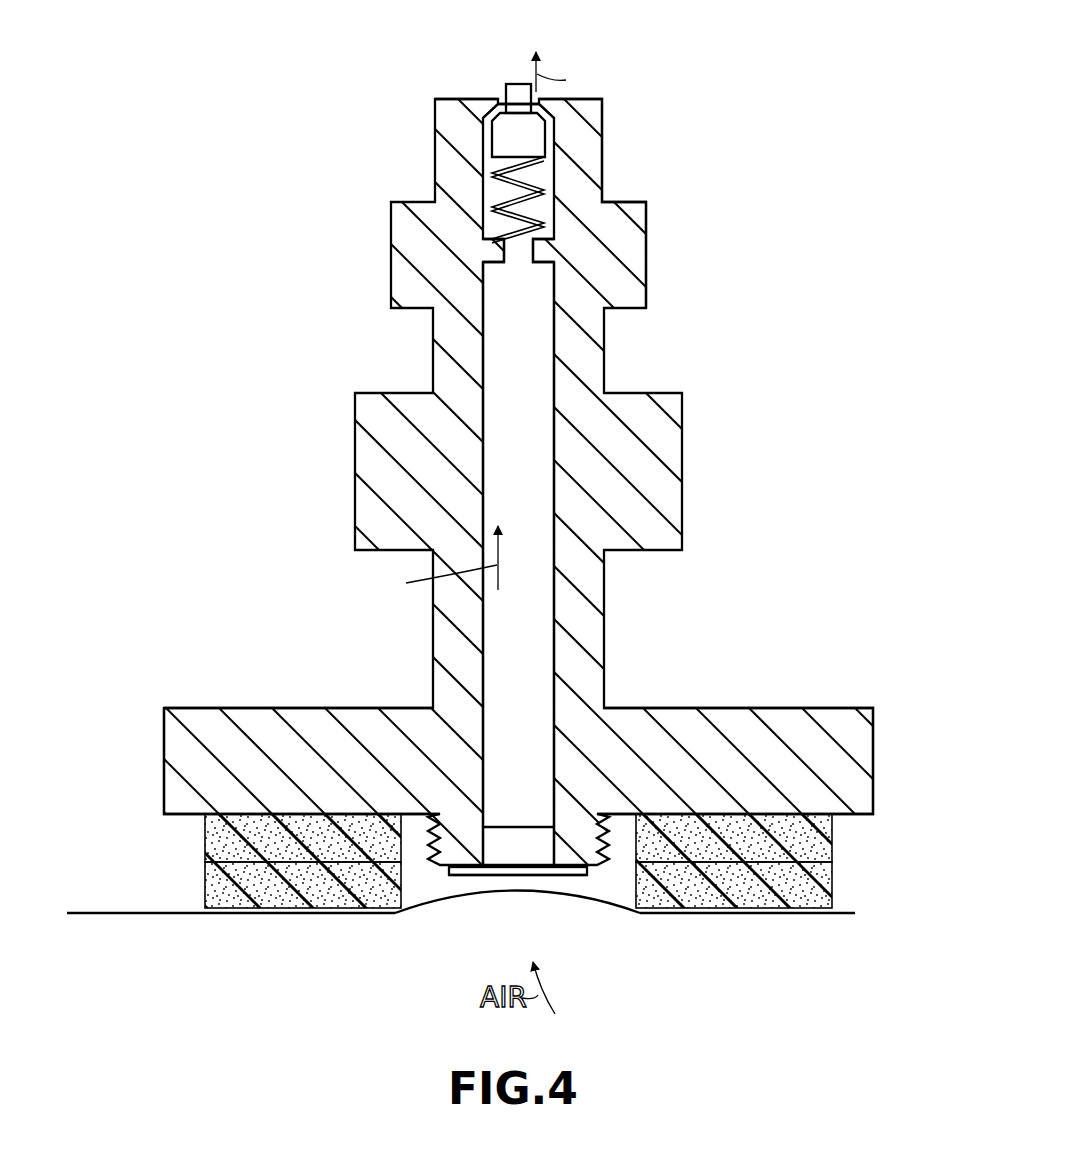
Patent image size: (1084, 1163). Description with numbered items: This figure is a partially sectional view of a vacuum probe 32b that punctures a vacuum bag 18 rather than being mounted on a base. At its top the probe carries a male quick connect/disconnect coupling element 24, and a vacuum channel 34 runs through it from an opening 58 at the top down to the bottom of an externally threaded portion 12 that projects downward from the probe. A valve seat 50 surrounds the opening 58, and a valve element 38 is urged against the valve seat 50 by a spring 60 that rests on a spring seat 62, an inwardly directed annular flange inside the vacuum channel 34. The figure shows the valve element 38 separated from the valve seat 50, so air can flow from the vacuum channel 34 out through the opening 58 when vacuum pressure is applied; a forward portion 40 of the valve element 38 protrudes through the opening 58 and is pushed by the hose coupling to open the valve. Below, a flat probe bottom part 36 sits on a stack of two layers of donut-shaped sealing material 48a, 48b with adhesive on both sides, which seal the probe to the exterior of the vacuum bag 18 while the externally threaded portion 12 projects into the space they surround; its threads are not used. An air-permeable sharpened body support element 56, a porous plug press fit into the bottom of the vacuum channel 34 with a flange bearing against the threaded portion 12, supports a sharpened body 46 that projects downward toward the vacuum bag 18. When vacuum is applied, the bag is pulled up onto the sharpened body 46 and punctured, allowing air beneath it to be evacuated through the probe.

The externally threaded portion 12 is at (603, 857).
The vacuum bag 18 is at (90, 913).
The male quick connect/disconnect coupling element 24 is at (603, 112).
The vacuum probe 32b is at (370, 252).
The vacuum channel 34 is at (481, 612).
The flat probe bottom part 36 is at (750, 708).
The valve element 38 is at (548, 140).
The forward portion 40 is at (515, 84).
The sharpened body 46 is at (518, 877).
The donut-shaped sealing material 48a is at (205, 838).
The donut-shaped sealing material 48b is at (205, 884).
The valve seat 50 is at (500, 124).
The air-permeable sharpened body support element 56 is at (482, 853).
The opening 58 is at (503, 100).
The spring 60 is at (543, 190).
The spring seat 62 is at (533, 263).